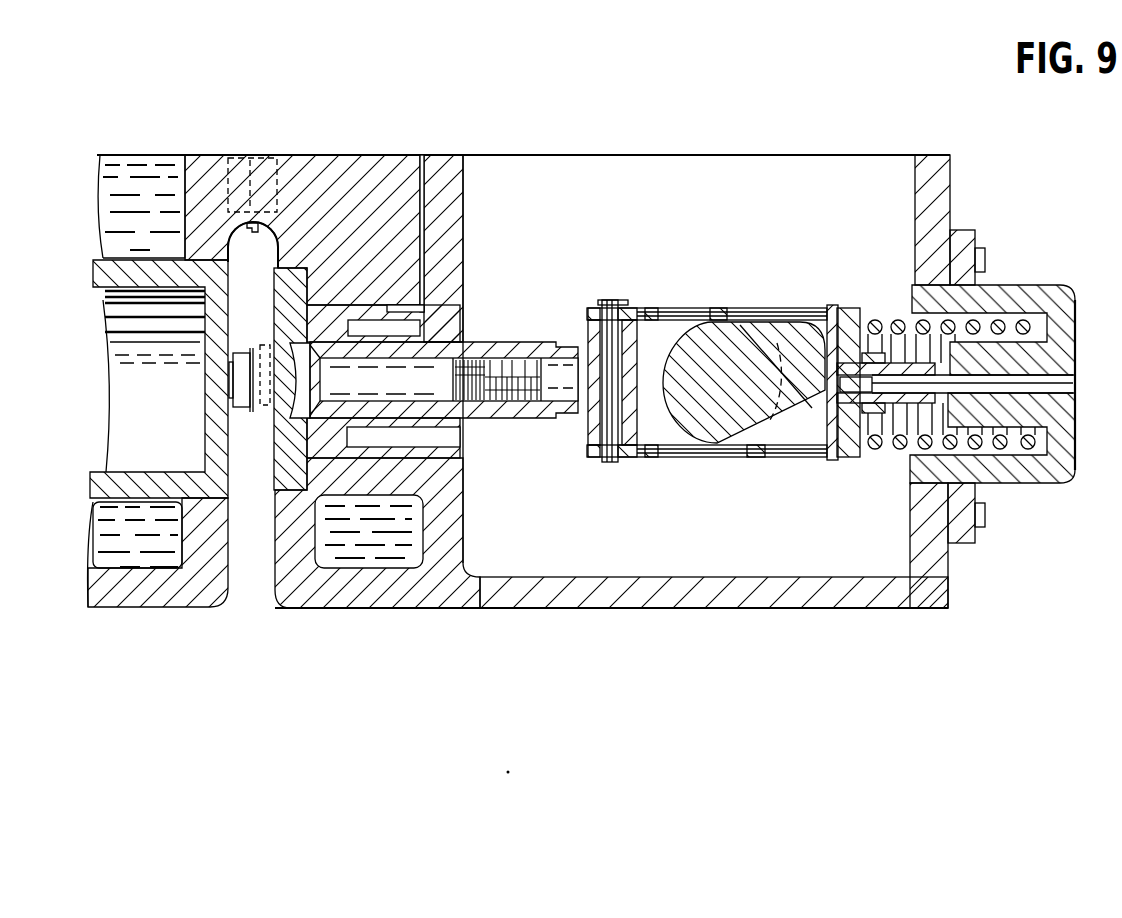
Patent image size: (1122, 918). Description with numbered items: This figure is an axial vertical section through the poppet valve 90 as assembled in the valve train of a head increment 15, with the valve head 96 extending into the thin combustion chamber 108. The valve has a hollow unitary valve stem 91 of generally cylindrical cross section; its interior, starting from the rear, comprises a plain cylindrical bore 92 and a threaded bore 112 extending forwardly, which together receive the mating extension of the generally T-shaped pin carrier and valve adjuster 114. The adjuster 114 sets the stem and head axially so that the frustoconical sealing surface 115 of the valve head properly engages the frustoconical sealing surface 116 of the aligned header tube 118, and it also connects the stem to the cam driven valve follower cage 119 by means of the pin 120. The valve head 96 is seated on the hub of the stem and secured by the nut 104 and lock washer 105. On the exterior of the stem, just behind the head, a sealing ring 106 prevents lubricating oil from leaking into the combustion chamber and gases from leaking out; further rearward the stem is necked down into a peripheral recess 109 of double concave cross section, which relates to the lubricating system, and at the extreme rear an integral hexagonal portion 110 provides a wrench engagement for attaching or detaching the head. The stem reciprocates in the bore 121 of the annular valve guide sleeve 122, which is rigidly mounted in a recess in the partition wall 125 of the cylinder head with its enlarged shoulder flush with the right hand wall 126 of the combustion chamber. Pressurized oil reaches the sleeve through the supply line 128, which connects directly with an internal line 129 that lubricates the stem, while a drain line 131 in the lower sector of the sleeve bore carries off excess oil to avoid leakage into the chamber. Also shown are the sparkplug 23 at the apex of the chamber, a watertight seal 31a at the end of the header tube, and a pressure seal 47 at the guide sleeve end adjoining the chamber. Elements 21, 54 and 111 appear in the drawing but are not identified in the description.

The head increment 15 is at (956, 188).
The piston 21 is at (793, 425).
The sparkplug 23 is at (256, 156).
The watertight seal 31a is at (186, 260).
The pressure seal 47 is at (318, 478).
The end plate 54 is at (827, 462).
The valve 90 is at (515, 338).
The valve stem 91 is at (480, 342).
The axial bore 92 is at (568, 404).
The valve head 96 is at (252, 316).
The nut 104 is at (226, 380).
The lock washer 105 is at (240, 430).
The sealing ring 106 is at (330, 371).
The combustion chamber 108 is at (240, 568).
The peripheral recess 109 is at (465, 335).
The hexagonal portion 110 is at (570, 343).
The spring 111 is at (483, 379).
The threaded bore 112 is at (470, 395).
The pin carrier and valve adjuster 114 is at (575, 440).
The frustoconical sealing surface of the valve head 115 is at (267, 264).
The frustoconical sealing surface of the header tube 116 is at (212, 413).
The header tube 118 is at (123, 262).
The valve follower cage 119 is at (703, 460).
The pin 120 is at (607, 463).
The bore of valve guide sleeve 121 is at (270, 333).
The valve guide sleeve 122 is at (348, 302).
The partition wall 125 is at (450, 528).
The right hand wall of the combustion chamber 126 is at (262, 578).
The supply line 128 is at (423, 155).
The internal line 129 is at (390, 310).
The drain line 131 is at (470, 447).